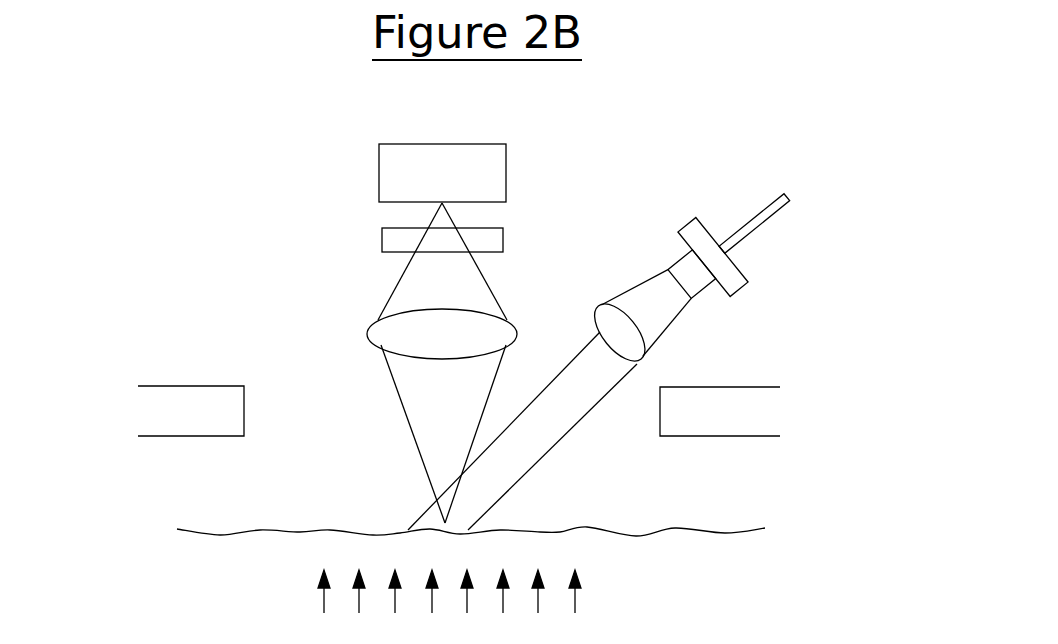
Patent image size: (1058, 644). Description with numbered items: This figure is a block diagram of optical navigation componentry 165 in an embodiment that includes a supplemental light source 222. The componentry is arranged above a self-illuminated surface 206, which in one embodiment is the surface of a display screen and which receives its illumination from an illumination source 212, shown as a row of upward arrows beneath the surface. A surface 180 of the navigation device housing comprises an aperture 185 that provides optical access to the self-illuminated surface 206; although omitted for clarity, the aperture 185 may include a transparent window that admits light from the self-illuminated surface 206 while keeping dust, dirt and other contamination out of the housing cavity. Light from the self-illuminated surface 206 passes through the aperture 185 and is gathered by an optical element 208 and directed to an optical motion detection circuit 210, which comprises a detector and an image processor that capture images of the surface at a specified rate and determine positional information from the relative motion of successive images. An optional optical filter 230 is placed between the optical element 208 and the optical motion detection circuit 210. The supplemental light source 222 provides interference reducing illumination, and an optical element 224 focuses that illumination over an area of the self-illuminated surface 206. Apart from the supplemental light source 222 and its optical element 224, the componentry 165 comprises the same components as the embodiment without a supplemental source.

The optical navigation componentry 165 is at (123, 103).
The optical motion detection circuit 210 is at (378, 174).
The optical filter 230 is at (381, 240).
The optical element 208 is at (367, 333).
The supplemental light source 222 is at (738, 289).
The optical element 224 is at (647, 363).
The surface 180 is at (165, 437).
The aperture 185 is at (347, 430).
The self-illuminated surface 206 is at (188, 532).
The illumination source 212 is at (597, 591).